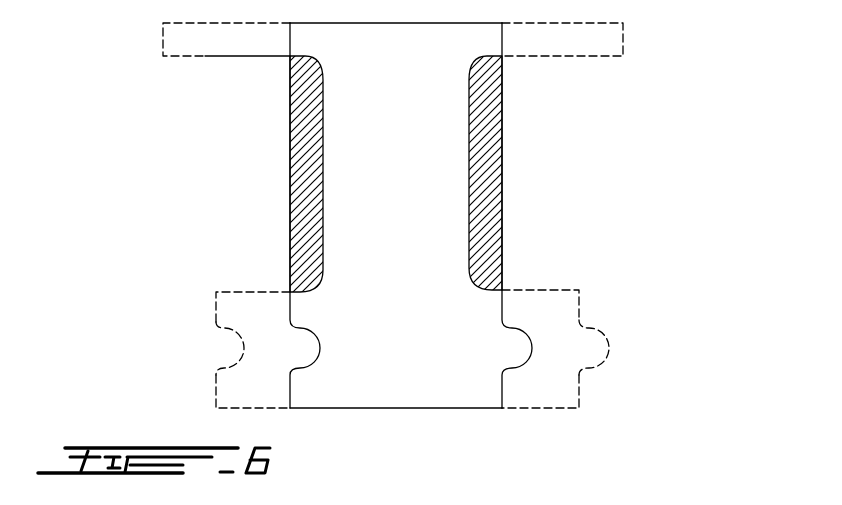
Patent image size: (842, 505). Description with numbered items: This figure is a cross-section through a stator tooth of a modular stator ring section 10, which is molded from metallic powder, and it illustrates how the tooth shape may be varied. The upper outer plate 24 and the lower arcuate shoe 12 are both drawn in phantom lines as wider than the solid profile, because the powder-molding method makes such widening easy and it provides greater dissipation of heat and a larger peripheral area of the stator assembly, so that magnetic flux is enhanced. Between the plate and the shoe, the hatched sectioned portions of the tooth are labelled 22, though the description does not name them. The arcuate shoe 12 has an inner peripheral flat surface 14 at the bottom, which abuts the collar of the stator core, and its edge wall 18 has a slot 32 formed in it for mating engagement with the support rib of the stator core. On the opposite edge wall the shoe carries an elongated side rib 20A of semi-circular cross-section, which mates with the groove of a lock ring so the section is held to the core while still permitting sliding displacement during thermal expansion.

The modular stator ring section 10 is at (204, 171).
The arcuate shoe 12 is at (542, 290).
The inner peripheral flat surface 14 is at (395, 409).
The edge wall 18 is at (217, 392).
The elongated side rib 20A is at (606, 338).
The bearing pad 22 is at (347, 113).
The outer plate 24 is at (606, 56).
The slot 32 is at (243, 347).